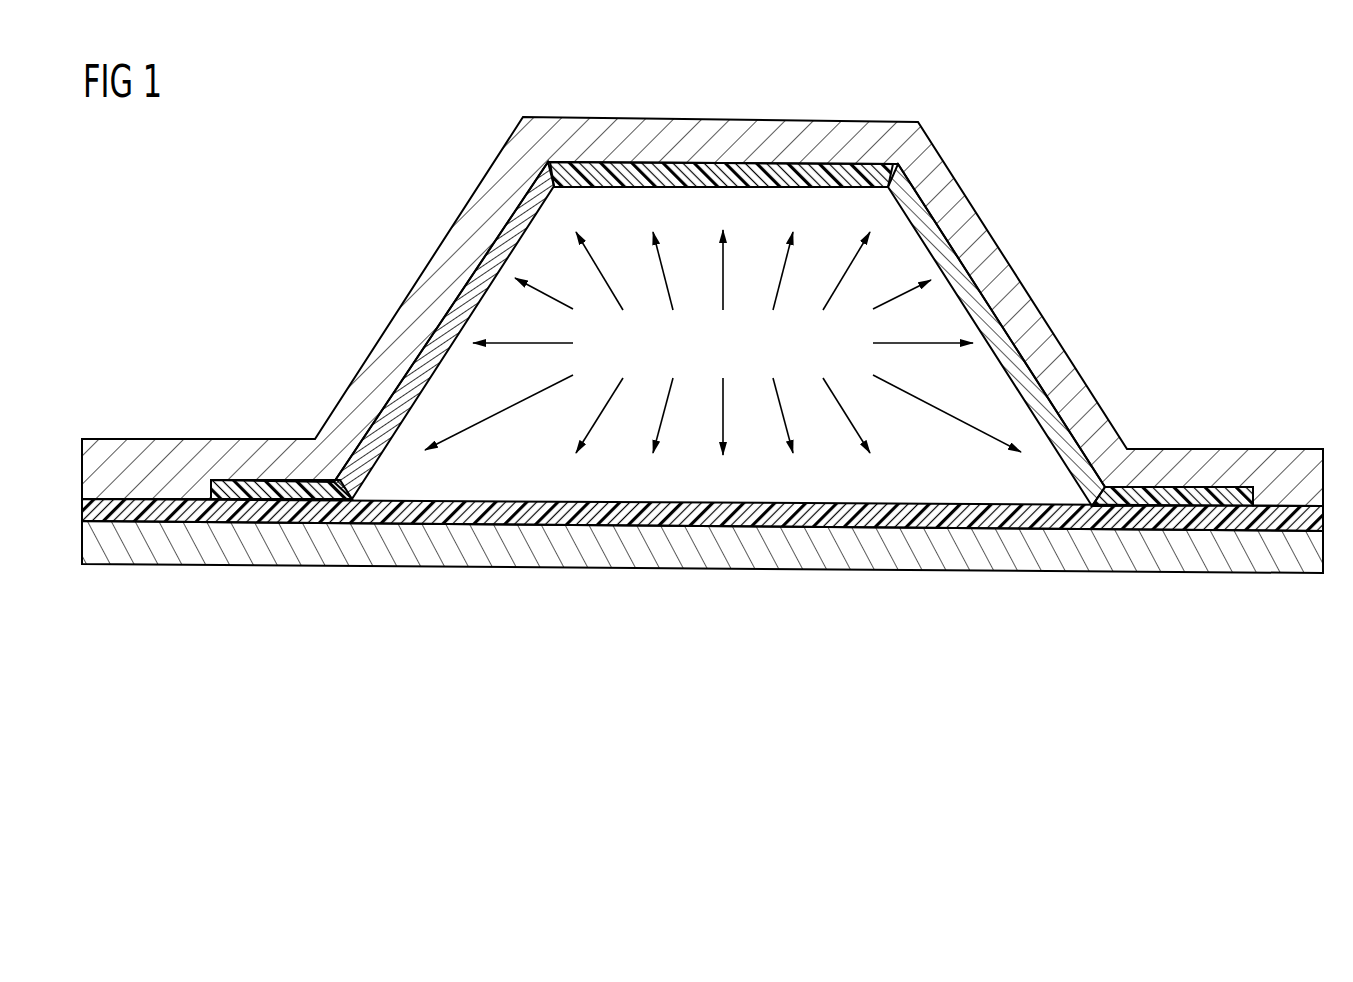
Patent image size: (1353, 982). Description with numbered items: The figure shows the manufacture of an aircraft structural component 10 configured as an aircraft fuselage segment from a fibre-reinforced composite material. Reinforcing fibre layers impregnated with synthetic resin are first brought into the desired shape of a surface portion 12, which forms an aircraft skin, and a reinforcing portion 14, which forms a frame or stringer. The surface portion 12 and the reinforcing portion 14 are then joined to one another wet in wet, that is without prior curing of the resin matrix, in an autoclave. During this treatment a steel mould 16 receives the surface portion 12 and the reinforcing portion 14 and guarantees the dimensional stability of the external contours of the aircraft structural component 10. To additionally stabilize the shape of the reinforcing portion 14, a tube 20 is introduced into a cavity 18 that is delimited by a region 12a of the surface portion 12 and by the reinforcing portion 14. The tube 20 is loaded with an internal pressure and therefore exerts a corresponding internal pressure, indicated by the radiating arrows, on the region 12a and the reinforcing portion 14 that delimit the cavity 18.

The aircraft structural component 10 is at (793, 158).
The surface portion 12 is at (803, 534).
The region of the surface portion 12a is at (680, 515).
The reinforcing portion 14 is at (960, 258).
The steel mould 16 is at (1223, 463).
The cavity 18 is at (917, 195).
The tube 20 is at (568, 193).